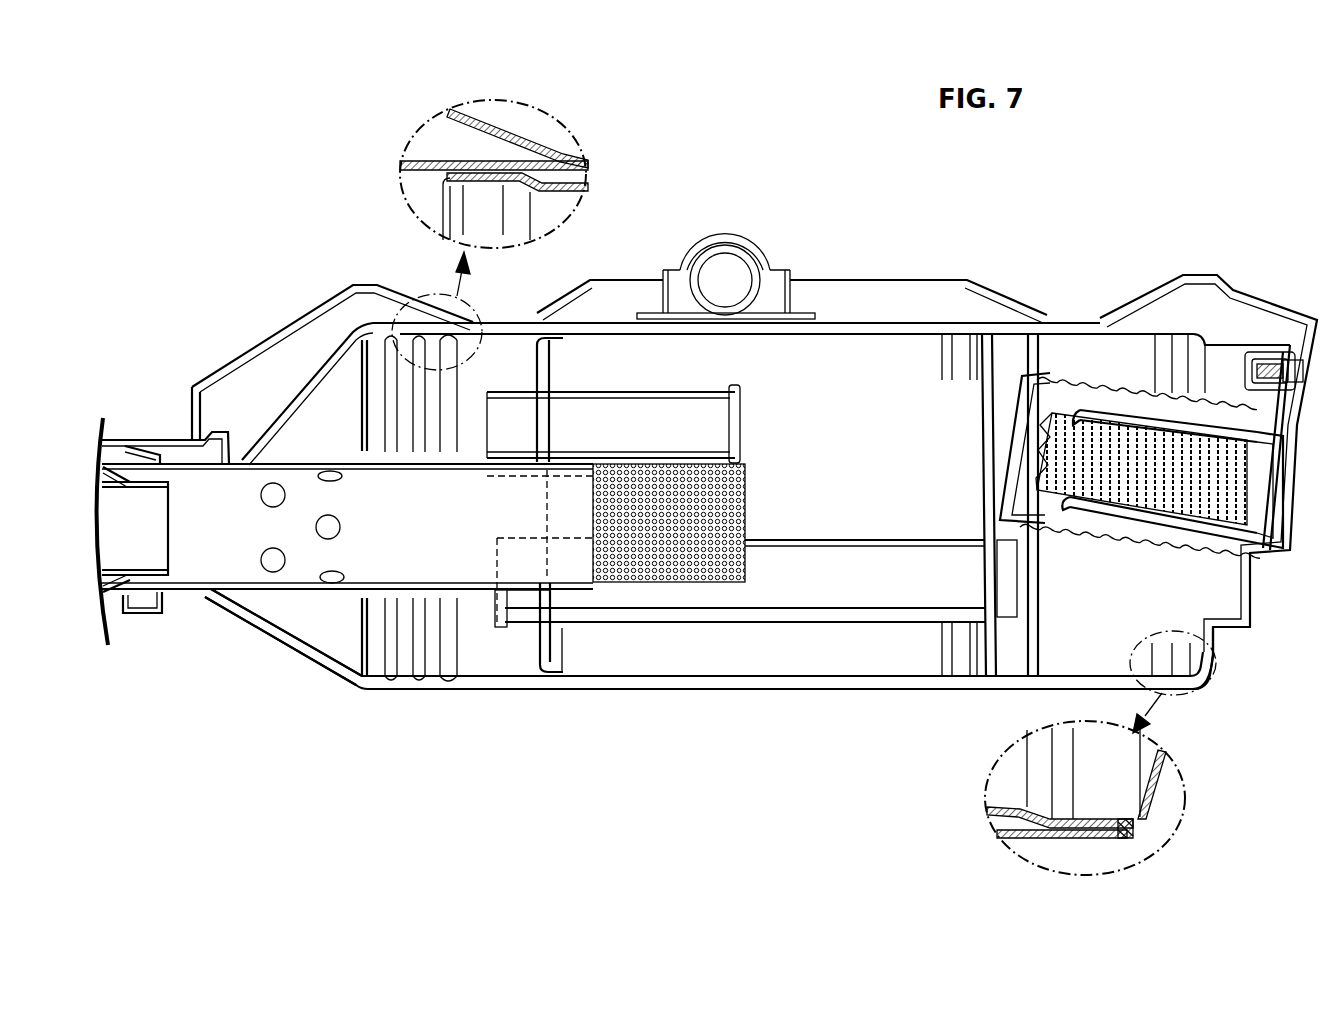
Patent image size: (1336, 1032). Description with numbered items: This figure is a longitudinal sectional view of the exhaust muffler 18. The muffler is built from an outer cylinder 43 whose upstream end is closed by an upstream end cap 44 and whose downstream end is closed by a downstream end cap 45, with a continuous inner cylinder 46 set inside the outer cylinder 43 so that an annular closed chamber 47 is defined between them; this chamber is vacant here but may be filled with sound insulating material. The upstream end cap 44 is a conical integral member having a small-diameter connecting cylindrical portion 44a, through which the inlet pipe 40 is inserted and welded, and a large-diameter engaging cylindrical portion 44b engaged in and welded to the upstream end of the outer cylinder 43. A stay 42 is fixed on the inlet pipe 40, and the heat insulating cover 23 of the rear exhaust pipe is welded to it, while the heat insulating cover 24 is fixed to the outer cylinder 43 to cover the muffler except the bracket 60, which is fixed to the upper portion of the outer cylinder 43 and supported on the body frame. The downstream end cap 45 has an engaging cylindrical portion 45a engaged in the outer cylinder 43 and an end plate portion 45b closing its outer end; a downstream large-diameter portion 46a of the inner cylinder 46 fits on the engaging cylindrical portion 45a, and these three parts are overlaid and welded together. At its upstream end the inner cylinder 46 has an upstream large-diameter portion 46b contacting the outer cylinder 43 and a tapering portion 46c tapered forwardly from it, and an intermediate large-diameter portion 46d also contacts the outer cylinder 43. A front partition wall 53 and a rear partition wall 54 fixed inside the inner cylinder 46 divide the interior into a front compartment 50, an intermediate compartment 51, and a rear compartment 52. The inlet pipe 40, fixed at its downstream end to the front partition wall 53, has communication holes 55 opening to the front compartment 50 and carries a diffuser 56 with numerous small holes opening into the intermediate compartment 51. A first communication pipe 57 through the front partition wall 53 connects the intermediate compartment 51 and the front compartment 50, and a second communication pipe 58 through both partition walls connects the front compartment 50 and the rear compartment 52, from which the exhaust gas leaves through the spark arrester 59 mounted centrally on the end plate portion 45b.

The exhaust muffler 18 is at (596, 700).
The heat insulating cover 23 is at (176, 436).
The heat insulating cover 24 is at (993, 290).
The inlet pipe 40 is at (190, 598).
The stay 42 is at (152, 436).
The outer cylinder 43 is at (850, 320).
The upstream end cap 44 is at (303, 387).
The small-diameter connecting cylindrical portion 44a is at (228, 595).
The large-diameter engaging cylindrical portion 44b is at (383, 690).
The downstream end cap 45 is at (1242, 328).
The engaging cylindrical portion 45a is at (1187, 653).
The end plate portion 45b is at (1212, 640).
The inner cylinder 46 is at (866, 684).
The downstream large-diameter portion 46a is at (1107, 833).
The upstream large-diameter portion 46b is at (588, 177).
The tapering portion 46c is at (447, 180).
The intermediate large-diameter portion 46d is at (962, 684).
The annular closed chamber 47 is at (904, 323).
The front compartment 50 is at (473, 662).
The intermediate compartment 51 is at (823, 440).
The rear compartment 52 is at (1093, 367).
The front partition wall 53 is at (536, 372).
The rear partition wall 54 is at (977, 465).
The communication holes 55 is at (338, 526).
The diffuser 56 is at (723, 582).
The first communication pipe 57 is at (620, 407).
The second communication pipe 58 is at (815, 567).
The spark arrester 59 is at (1187, 384).
The bracket 60 is at (720, 245).